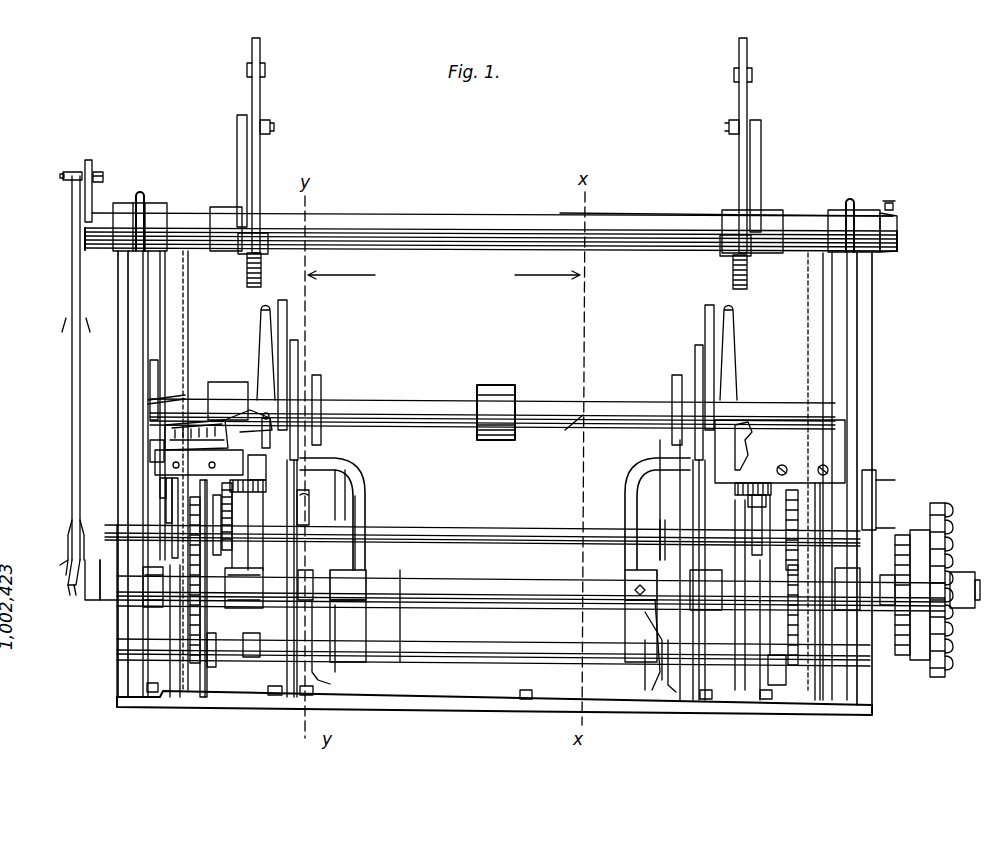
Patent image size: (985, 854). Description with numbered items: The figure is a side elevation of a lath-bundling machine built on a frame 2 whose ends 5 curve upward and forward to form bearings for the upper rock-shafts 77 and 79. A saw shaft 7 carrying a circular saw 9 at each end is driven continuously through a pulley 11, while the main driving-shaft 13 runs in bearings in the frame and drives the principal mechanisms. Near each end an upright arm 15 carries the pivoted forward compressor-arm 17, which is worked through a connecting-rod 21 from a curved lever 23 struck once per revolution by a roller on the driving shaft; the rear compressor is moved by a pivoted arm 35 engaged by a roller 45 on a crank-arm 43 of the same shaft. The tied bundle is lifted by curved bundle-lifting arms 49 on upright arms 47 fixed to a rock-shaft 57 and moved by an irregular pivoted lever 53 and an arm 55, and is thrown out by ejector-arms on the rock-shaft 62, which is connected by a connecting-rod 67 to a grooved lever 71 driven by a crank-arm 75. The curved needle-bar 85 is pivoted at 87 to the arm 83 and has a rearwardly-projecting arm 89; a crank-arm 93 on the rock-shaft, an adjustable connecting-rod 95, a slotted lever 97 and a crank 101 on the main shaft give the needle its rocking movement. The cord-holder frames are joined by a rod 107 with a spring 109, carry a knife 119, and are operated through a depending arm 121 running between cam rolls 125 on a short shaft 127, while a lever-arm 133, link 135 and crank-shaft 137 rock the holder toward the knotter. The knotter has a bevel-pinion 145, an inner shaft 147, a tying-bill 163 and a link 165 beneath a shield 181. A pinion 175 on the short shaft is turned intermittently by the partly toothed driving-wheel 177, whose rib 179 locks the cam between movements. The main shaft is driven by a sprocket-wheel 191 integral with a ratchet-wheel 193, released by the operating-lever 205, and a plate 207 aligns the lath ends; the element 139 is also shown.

The frame 2 is at (510, 703).
The ends of the frame 5 is at (118, 322).
The saw shaft 7 is at (578, 430).
The circular saw 9 is at (190, 345).
The pulley 11 is at (516, 389).
The driving-shaft 13 is at (492, 608).
The upright arm 15 is at (300, 356).
The forward compressor-arm 17 is at (288, 324).
The connecting-rod 21 is at (322, 388).
The curved lever 23 is at (500, 513).
The pivoted arm 35 is at (355, 556).
The crank-arm 43 is at (326, 690).
The roller 45 is at (661, 674).
The upright arm 47 is at (352, 485).
The bundle-lifting arm 49 is at (355, 396).
The irregular pivoted lever 53 is at (660, 520).
The arm 55 is at (628, 612).
The rock-shaft 57 is at (553, 656).
The rock-shaft 62 is at (490, 530).
The connecting-rod 67 is at (260, 362).
The lever 71 is at (336, 510).
The crank-arm 75 is at (366, 614).
The rock-shaft 77 is at (643, 252).
The rock-shaft 79 is at (655, 222).
The arm 83 is at (238, 172).
The needle-bar 85 is at (261, 188).
The pivot 87 is at (275, 128).
The rearwardly-projecting arm 89 is at (261, 92).
The crank-arm 93 is at (90, 197).
The adjustable connecting-rod 95 is at (72, 276).
The lever 97 is at (68, 562).
The crank 101 is at (88, 572).
The rod 107 is at (160, 452).
The spring 109 is at (165, 440).
The knife 119 is at (238, 420).
The depending arm 121 is at (199, 462).
The cam rolls 125 is at (803, 548).
The short shaft 127 is at (192, 588).
The lever-arm 133 is at (160, 490).
The link 135 is at (168, 505).
The crank-shaft 137 is at (175, 520).
The collar 139 is at (520, 550).
The bevel-pinion 145 is at (760, 495).
The shaft 147 is at (752, 444).
The tying-bill 163 is at (318, 428).
The link 165 is at (326, 448).
The pinion 175 is at (147, 606).
The driving-wheel 177 is at (186, 620).
The rib 179 is at (205, 672).
The shield 181 is at (835, 430).
The sprocket-wheel 191 is at (925, 650).
The ratchet-wheel 193 is at (896, 655).
The operating-lever 205 is at (887, 500).
The plate 207 is at (150, 375).